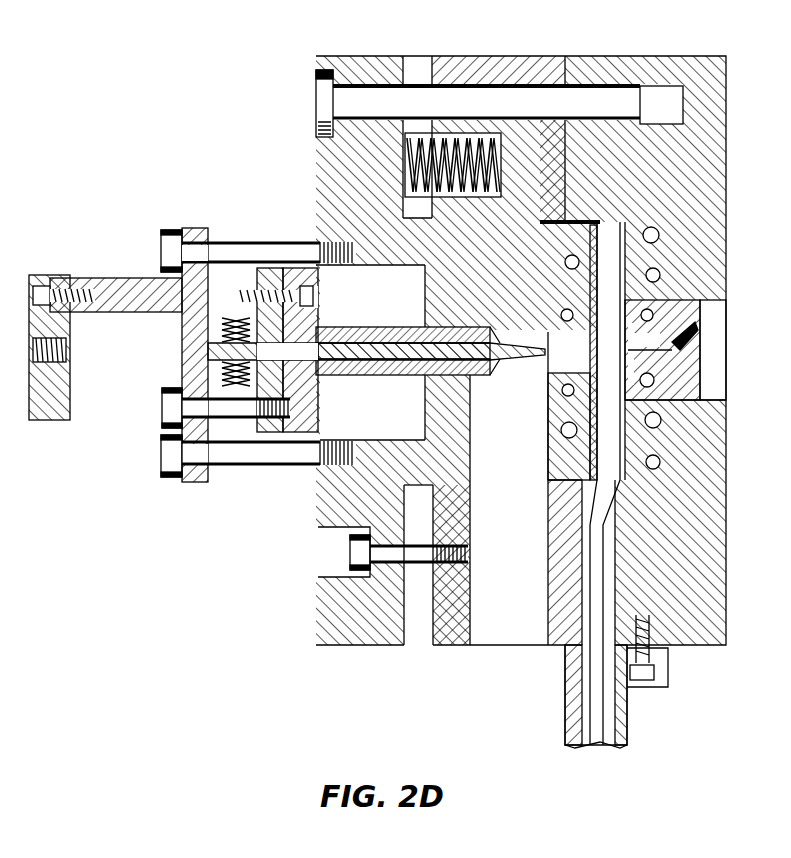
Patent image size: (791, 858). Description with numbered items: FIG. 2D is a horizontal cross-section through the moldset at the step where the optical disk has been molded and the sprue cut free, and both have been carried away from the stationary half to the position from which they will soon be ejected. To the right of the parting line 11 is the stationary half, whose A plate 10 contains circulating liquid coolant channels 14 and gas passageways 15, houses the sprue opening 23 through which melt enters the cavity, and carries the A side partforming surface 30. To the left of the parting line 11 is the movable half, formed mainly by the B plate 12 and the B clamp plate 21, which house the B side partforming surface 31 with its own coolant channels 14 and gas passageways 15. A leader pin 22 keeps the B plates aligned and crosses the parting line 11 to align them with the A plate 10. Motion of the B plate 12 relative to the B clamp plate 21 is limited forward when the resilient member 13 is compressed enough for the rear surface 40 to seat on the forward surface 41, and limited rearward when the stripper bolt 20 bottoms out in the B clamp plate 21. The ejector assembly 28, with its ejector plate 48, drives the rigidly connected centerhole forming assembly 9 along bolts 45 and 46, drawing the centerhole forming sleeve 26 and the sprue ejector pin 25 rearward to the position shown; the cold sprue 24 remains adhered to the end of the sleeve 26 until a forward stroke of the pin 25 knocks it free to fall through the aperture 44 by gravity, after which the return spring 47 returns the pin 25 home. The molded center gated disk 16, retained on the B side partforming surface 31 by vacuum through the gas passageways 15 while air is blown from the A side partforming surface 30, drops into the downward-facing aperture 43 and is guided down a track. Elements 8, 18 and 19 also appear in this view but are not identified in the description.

The valve seat 8 is at (690, 386).
The centerhole forming assembly 9 is at (268, 265).
The A plate 10 is at (668, 75).
The parting line 11 is at (565, 70).
The B plate 12 is at (510, 70).
The resilient member 13 is at (462, 70).
The circulating liquid coolant channels 14 is at (650, 232).
The gas passageways 15 is at (566, 383).
The center gated disk 16 is at (565, 412).
The nozzle 18 is at (607, 708).
The nut 19 is at (668, 660).
The stripper bolt 20 is at (358, 550).
The B clamp plate 21 is at (323, 622).
The leader pin 22 is at (316, 108).
The sprue opening 23 is at (680, 345).
The cold sprue 24 is at (490, 340).
The sprue ejector pin 25 is at (336, 358).
The centerhole forming sleeve 26 is at (375, 366).
The ejector assembly 28 is at (190, 330).
The A side partforming surface 30 is at (645, 432).
The B side partforming surface 31 is at (578, 457).
The B plate rear surface 40 is at (430, 72).
The B clamp plate forward surface 41 is at (405, 640).
The aperture 43 is at (582, 730).
The aperture 44 is at (508, 620).
The bolt 45 is at (256, 452).
The bolt 46 is at (165, 408).
The return spring 47 is at (235, 382).
The ejector plate 48 is at (182, 336).